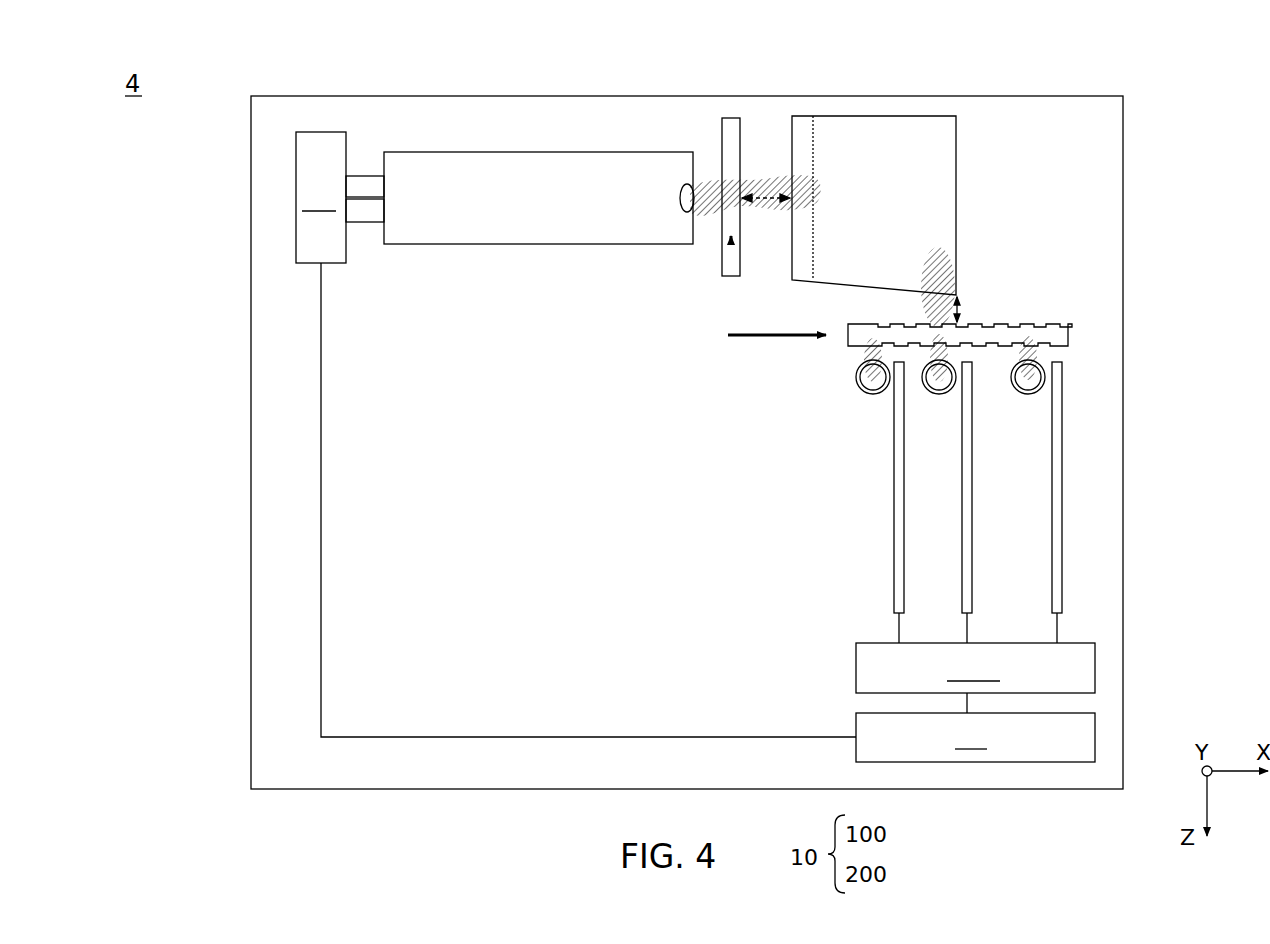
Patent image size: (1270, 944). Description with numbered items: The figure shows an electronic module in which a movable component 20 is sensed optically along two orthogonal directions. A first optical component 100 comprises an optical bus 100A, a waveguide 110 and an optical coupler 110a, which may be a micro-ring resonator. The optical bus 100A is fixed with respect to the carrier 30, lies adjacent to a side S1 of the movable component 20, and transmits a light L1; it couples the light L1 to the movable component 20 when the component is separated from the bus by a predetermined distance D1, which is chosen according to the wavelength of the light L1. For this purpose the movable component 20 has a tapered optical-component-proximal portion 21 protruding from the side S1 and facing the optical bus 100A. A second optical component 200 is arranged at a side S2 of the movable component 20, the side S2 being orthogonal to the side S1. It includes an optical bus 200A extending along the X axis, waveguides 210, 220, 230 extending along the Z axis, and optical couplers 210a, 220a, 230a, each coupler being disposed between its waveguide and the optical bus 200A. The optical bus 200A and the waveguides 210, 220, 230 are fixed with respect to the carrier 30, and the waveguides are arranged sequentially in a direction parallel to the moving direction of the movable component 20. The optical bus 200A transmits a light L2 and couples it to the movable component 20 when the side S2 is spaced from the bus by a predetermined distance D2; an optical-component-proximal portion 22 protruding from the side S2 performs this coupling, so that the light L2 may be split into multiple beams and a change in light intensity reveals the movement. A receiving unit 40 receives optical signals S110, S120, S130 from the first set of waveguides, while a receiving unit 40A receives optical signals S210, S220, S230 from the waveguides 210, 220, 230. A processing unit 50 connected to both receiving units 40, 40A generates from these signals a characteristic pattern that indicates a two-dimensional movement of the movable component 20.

The movable component 20 is at (885, 125).
The optical-component-proximal portion 21 is at (793, 138).
The optical-component-proximal portion 22 is at (958, 292).
The carrier 30 is at (1105, 161).
The receiving unit 40 is at (576, 434).
The receiving unit 40A is at (975, 678).
The processing unit 50 is at (975, 737).
The optical component 100 is at (290, 104).
The optical bus 100A is at (730, 118).
The waveguide 110 is at (567, 160).
The optical coupler 110a is at (687, 184).
The optical component 200 is at (1098, 373).
The optical bus 200A is at (848, 335).
The waveguide 210 is at (894, 575).
The waveguide 220 is at (974, 575).
The waveguide 230 is at (1064, 572).
The optical coupler 210a is at (863, 394).
The optical coupler 220a is at (945, 395).
The optical coupler 230a is at (1042, 395).
The side S1 is at (804, 130).
The side S2 is at (838, 288).
The optical signal S110 is at (358, 176).
The optical signal S120 is at (370, 195).
The optical signal S130 is at (366, 222).
The optical signal S210 is at (896, 624).
The optical signal S220 is at (970, 626).
The optical signal S230 is at (1059, 628).
The light L1 is at (731, 260).
The light L2 is at (752, 338).
The predetermined distance D1 is at (757, 208).
The predetermined distance D2 is at (962, 308).